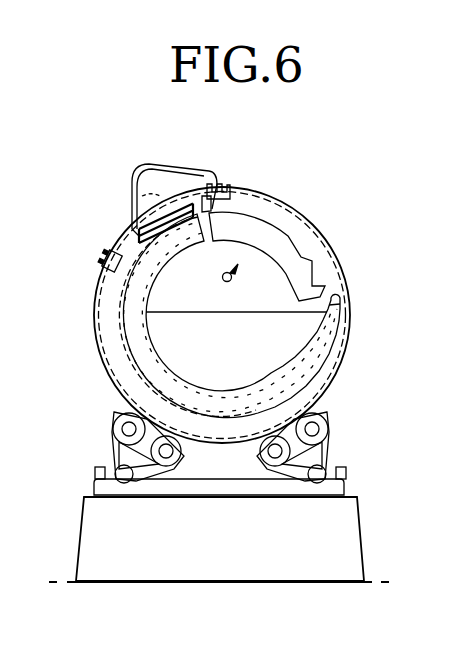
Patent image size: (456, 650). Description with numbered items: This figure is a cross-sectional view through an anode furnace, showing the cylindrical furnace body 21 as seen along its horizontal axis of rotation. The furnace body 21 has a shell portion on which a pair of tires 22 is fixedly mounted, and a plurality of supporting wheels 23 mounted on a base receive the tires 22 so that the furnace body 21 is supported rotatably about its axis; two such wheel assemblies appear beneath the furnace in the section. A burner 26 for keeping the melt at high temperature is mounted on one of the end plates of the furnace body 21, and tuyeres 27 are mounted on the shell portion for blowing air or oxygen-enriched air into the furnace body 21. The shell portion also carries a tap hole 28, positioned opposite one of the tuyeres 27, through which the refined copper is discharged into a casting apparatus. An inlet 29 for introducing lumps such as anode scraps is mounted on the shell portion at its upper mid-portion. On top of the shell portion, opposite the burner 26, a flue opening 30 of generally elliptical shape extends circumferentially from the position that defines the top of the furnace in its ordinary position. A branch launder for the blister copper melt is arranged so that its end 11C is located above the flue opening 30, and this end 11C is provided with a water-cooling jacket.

The end of the launder 11C is at (238, 184).
The furnace body 21 is at (318, 383).
The tire 22 is at (345, 242).
The supporting wheel 23 is at (117, 413).
The burner 26 is at (239, 266).
The tuyere 27 is at (102, 262).
The tap hole 28 is at (350, 288).
The inlet 29 is at (163, 200).
The flue opening 30 is at (283, 240).